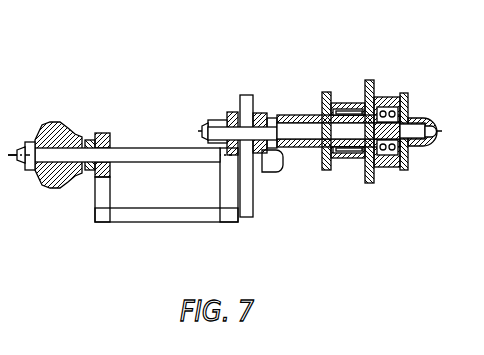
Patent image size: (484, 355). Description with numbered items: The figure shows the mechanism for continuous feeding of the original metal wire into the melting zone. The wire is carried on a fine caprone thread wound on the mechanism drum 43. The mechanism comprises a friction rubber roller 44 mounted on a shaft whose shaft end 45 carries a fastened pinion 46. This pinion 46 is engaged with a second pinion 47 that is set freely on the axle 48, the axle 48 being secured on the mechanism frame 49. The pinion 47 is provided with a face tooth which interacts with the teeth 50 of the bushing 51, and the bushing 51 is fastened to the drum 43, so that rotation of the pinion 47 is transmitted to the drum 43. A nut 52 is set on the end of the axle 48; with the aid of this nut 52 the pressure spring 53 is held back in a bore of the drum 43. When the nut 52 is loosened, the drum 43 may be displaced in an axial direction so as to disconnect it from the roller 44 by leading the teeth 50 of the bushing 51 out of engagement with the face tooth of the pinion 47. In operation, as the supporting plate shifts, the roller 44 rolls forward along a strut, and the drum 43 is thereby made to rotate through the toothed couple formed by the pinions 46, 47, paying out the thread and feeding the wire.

The mechanism drum 43 is at (379, 186).
The friction rubber roller 44 is at (55, 124).
The shaft end 45 is at (133, 147).
The pinion 46 is at (248, 190).
The pinion 47 is at (235, 110).
The axle 48 is at (309, 122).
The mechanism frame 49 is at (171, 219).
The teeth 50 is at (273, 176).
The bushing 51 is at (303, 113).
The nut 52 is at (421, 117).
The pressure spring 53 is at (384, 100).